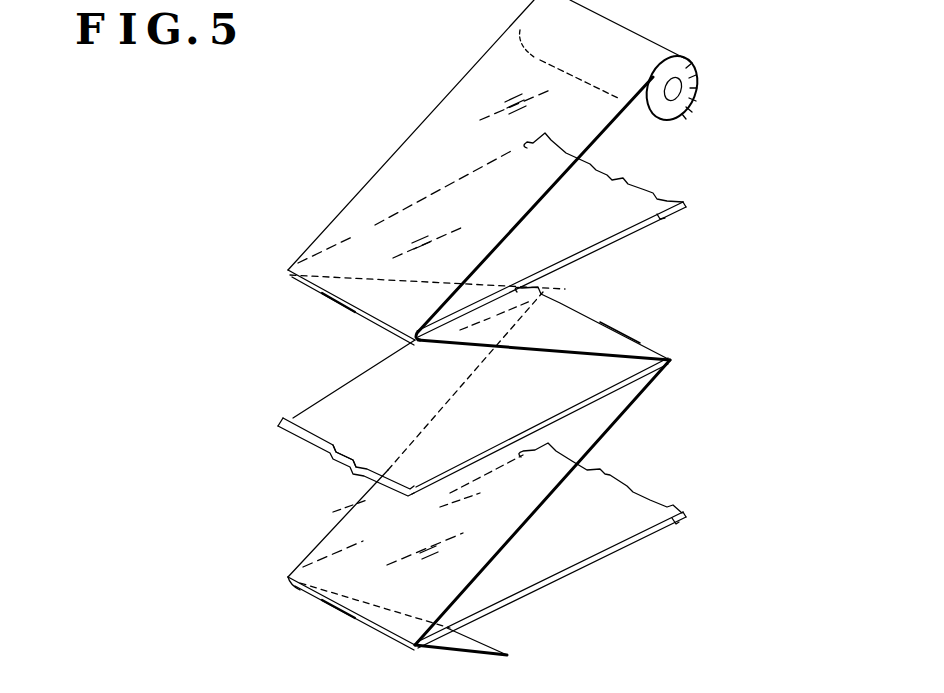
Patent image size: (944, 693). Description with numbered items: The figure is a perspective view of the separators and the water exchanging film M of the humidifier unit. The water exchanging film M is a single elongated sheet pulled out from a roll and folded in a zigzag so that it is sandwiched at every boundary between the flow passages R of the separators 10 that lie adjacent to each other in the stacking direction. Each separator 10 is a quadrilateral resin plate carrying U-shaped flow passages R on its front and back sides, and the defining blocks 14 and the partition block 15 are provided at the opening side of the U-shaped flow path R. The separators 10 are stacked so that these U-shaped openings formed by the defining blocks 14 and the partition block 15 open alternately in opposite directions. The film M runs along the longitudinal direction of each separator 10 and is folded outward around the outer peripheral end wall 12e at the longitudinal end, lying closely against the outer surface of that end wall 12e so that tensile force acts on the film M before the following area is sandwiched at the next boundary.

The water exchanging film M is at (460, 103).
The separator 10 is at (481, 389).
The outer peripheral end wall 12e is at (335, 296).
The defining block 14 is at (688, 202).
The partition block 15 is at (627, 176).
The flow passage R is at (527, 242).